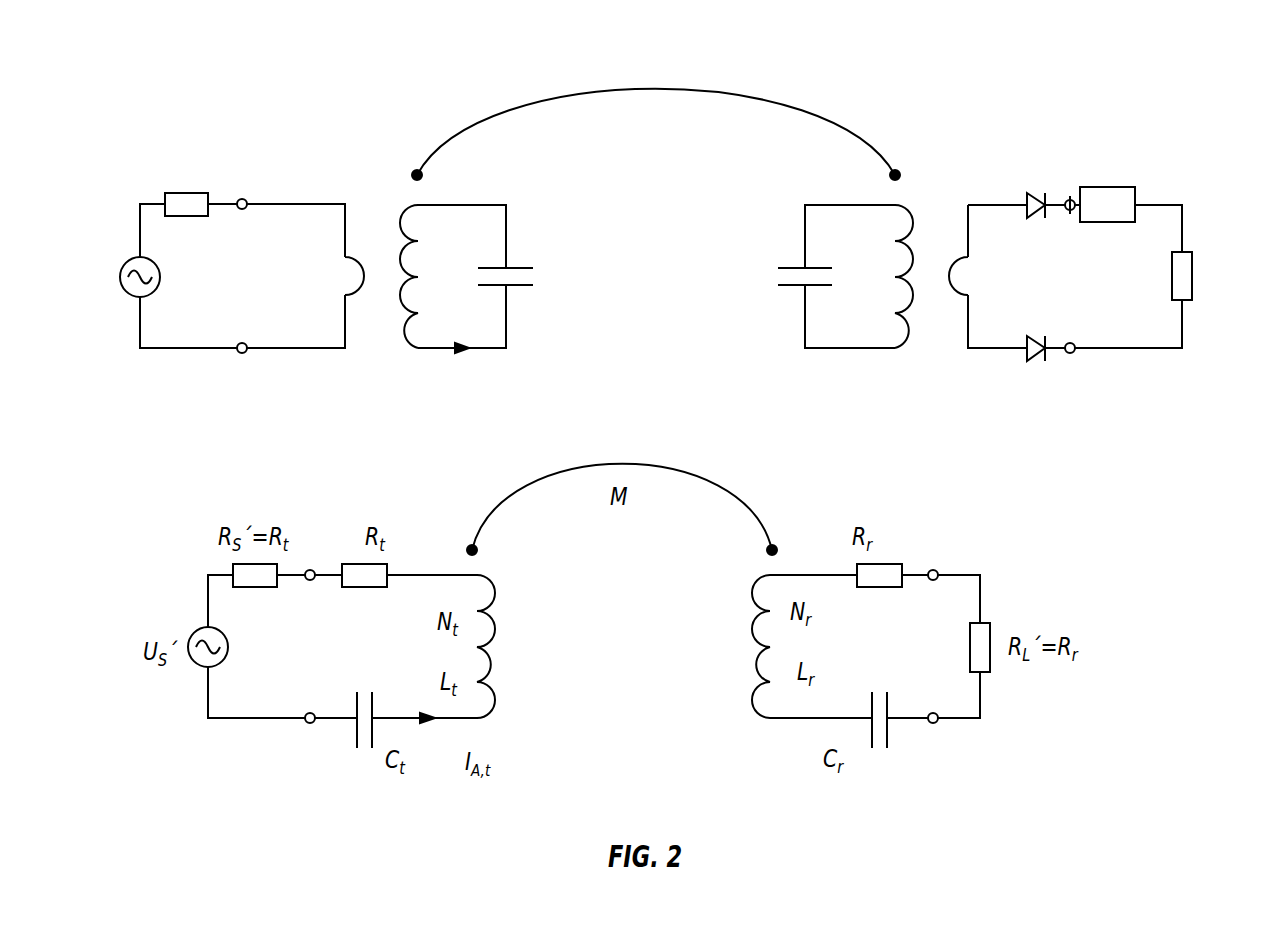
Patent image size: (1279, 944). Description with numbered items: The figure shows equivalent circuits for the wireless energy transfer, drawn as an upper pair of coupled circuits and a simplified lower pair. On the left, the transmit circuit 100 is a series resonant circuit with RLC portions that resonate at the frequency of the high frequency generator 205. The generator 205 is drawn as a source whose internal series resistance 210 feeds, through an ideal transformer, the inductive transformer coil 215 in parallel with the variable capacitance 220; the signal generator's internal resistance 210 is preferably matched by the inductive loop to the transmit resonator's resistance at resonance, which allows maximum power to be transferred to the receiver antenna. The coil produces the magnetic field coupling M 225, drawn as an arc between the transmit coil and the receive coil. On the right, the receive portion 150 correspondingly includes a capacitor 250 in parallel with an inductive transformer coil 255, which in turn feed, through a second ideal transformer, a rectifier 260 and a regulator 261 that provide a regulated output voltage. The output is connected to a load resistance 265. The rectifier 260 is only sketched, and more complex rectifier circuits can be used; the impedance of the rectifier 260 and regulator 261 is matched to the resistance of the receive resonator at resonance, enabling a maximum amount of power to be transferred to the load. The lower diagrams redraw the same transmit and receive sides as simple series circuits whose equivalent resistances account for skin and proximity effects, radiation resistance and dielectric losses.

The transmit circuit 100 is at (318, 142).
The high frequency generator 205 is at (131, 260).
The series resistance 210 is at (167, 196).
The inductive transformer coil 215 is at (393, 191).
The variable capacitance 220 is at (520, 287).
The magnetic field coupling M 225 is at (663, 88).
The capacitor 250 is at (790, 288).
The inductive transformer coil 255 is at (965, 191).
The rectifier 260 is at (1038, 190).
The regulator 261 is at (1125, 187).
The load resistance 265 is at (1194, 276).
The receive portion 150 is at (970, 386).